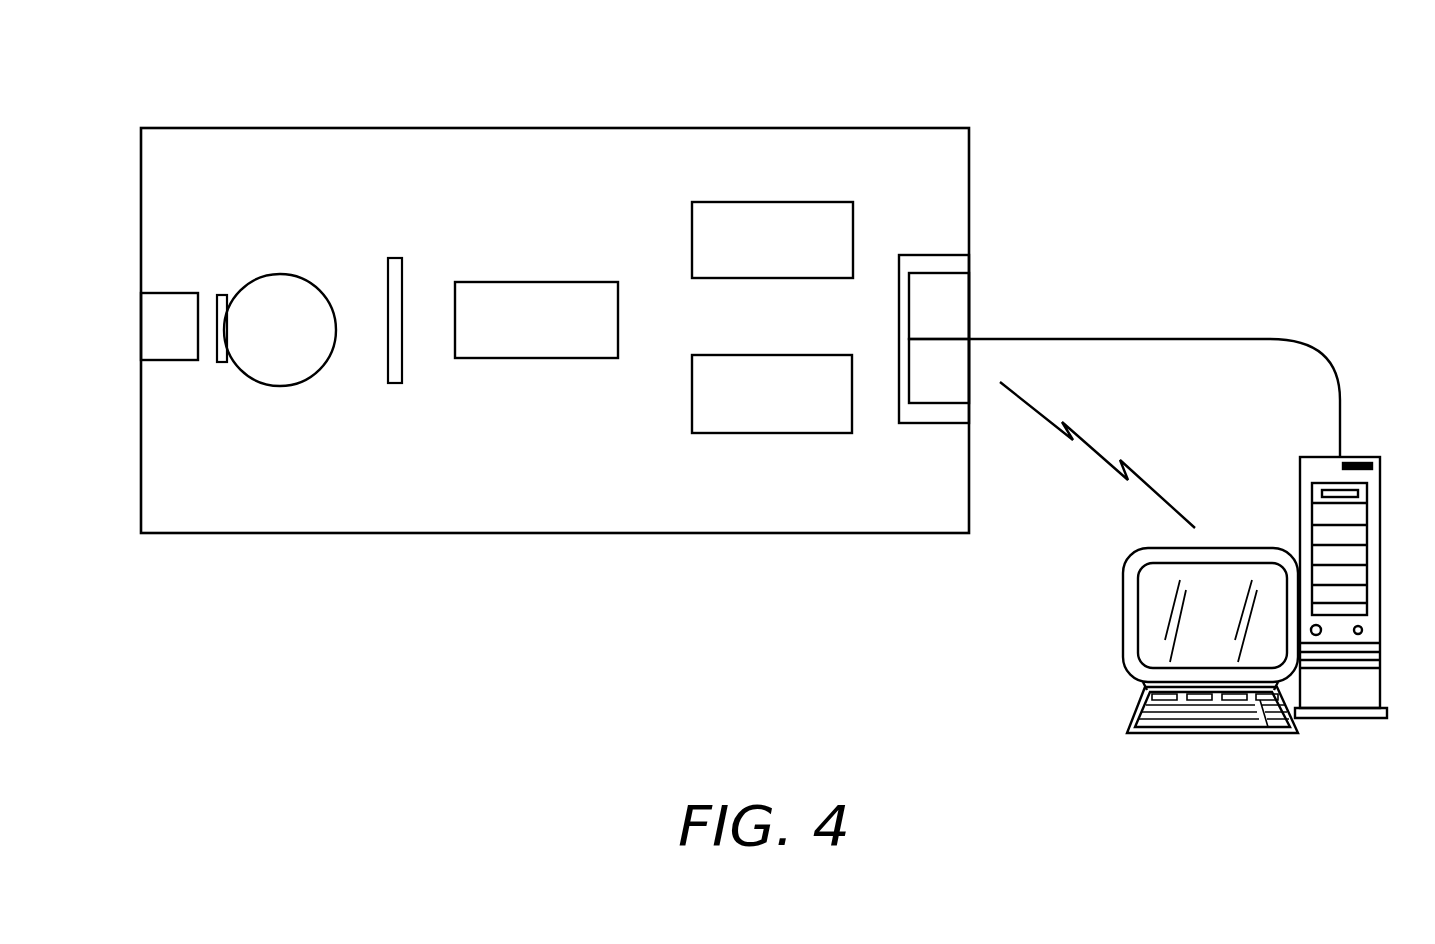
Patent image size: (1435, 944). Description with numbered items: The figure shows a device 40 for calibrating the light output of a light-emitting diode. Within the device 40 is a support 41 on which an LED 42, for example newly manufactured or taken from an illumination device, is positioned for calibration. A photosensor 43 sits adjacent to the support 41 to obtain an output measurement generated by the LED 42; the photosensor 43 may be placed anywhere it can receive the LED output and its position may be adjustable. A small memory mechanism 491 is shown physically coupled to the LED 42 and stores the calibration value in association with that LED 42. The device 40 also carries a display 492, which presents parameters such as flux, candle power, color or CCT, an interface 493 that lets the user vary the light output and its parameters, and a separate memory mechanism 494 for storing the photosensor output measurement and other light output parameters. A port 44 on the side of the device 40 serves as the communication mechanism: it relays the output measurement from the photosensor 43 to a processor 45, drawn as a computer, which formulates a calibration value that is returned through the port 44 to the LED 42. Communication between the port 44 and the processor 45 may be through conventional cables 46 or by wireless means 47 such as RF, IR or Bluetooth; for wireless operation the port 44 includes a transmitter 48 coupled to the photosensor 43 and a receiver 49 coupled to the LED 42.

The device 40 is at (1063, 105).
The support 41 is at (160, 327).
The LED 42 is at (283, 390).
The photosensor 43 is at (396, 258).
The port 44 is at (983, 289).
The processor 45 is at (1302, 462).
The cables 46 is at (1310, 355).
The wireless means 47 is at (1075, 432).
The transmitter 48 is at (952, 313).
The receiver 49 is at (947, 375).
The memory mechanism 491 is at (217, 295).
The display 492 is at (717, 202).
The interface 493 is at (745, 433).
The memory mechanism 494 is at (583, 282).